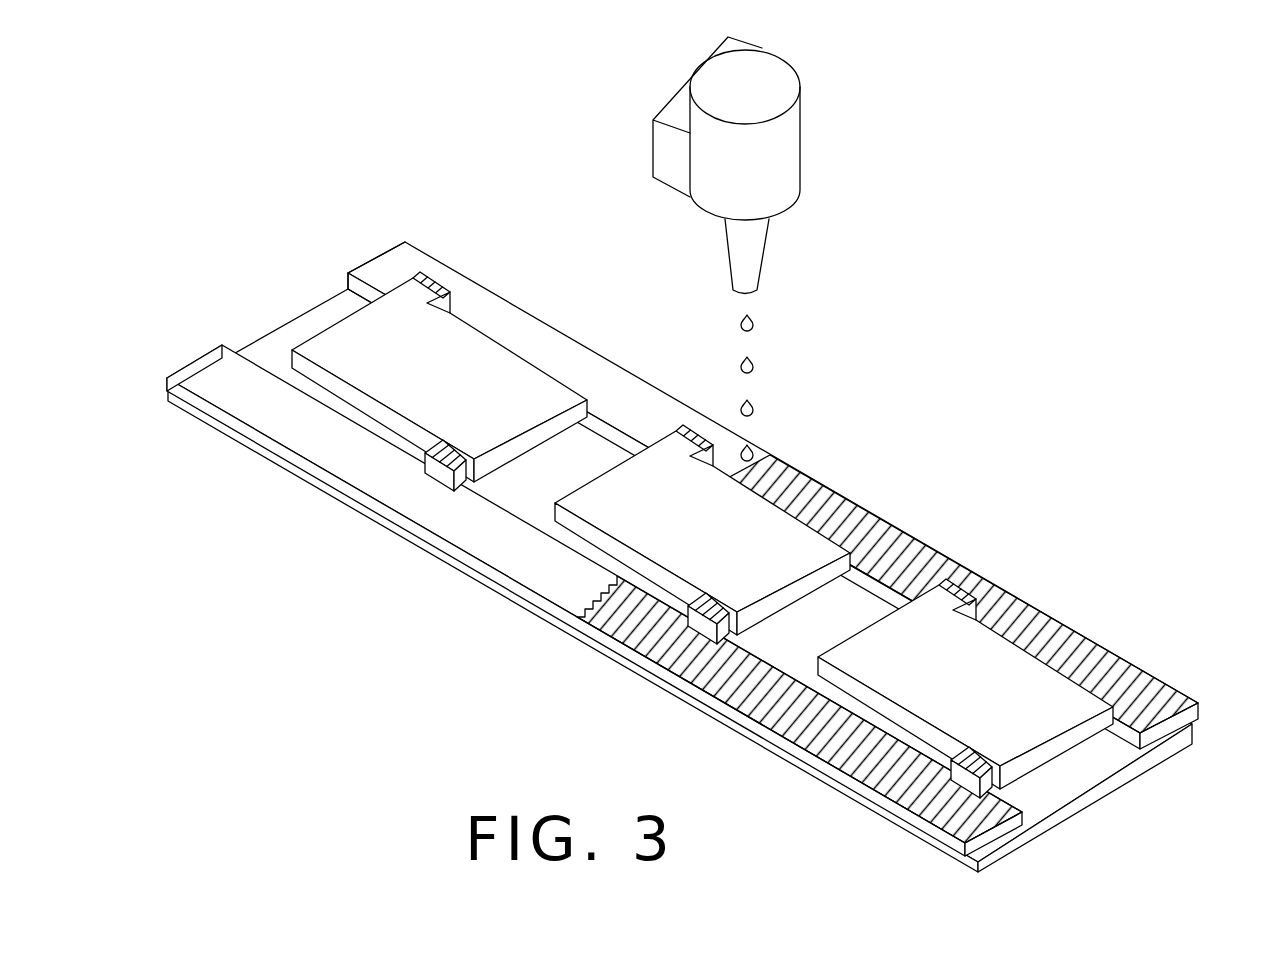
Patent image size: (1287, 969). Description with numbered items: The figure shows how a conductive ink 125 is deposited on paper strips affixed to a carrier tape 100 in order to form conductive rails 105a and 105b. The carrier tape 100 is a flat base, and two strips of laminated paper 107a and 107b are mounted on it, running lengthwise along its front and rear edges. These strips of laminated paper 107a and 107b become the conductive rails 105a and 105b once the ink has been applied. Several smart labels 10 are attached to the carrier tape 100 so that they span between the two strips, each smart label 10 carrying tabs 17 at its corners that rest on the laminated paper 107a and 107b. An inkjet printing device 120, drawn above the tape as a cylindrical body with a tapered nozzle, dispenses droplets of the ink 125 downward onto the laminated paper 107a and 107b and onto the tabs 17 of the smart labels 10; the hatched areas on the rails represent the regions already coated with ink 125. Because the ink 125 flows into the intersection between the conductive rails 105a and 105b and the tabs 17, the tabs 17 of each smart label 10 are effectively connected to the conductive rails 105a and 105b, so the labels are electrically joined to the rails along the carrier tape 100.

The smart label 10 is at (497, 358).
The tab 17 is at (446, 287).
The carrier tape 100 is at (1085, 800).
The conductive rail 105a is at (1163, 741).
The conductive rail 105b is at (993, 832).
The laminated paper 107a is at (354, 283).
The laminated paper 107b is at (167, 381).
The inkjet printing device 120 is at (770, 257).
The conductive ink 125 is at (612, 638).